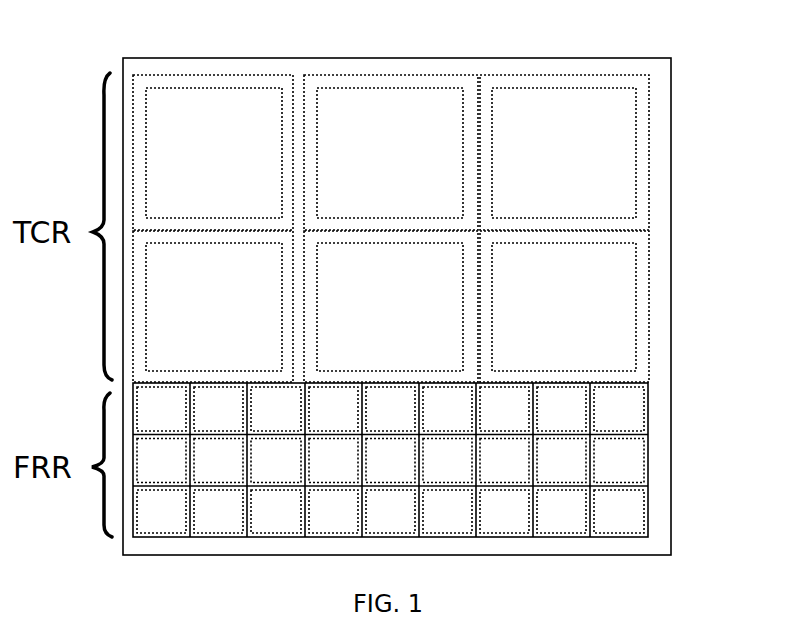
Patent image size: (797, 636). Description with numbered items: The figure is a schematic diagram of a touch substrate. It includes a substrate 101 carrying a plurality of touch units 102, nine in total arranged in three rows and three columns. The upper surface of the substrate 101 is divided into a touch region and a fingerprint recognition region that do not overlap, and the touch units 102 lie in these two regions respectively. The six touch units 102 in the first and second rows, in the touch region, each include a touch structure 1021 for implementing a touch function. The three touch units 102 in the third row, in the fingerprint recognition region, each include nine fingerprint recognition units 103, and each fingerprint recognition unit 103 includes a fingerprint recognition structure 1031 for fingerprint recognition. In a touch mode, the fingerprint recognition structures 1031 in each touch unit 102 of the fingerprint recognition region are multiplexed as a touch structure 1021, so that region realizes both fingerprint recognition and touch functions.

The substrate 101 is at (222, 43).
The touch unit 102 is at (243, 77).
The touch structure 1021 is at (283, 88).
The fingerprint recognition unit 103 is at (648, 428).
The fingerprint recognition structure 1031 is at (640, 415).